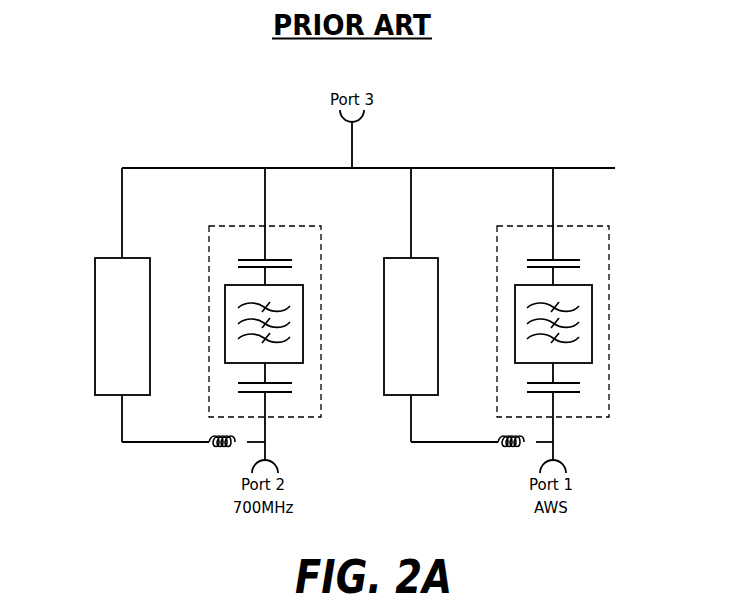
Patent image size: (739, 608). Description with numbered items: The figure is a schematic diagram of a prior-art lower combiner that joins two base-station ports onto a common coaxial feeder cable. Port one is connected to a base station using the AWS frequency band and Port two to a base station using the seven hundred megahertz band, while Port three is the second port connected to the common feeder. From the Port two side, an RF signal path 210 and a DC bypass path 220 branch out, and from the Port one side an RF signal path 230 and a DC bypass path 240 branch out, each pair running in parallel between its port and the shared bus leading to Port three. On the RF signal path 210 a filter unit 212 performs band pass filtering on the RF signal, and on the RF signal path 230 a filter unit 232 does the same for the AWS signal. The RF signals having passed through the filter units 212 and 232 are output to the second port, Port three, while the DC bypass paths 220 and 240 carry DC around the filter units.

The RF signal path 210 is at (243, 304).
The filter unit 212 is at (225, 292).
The DC bypass path 220 is at (95, 326).
The RF signal path 230 is at (574, 304).
The filter unit 232 is at (592, 292).
The DC bypass path 240 is at (422, 258).